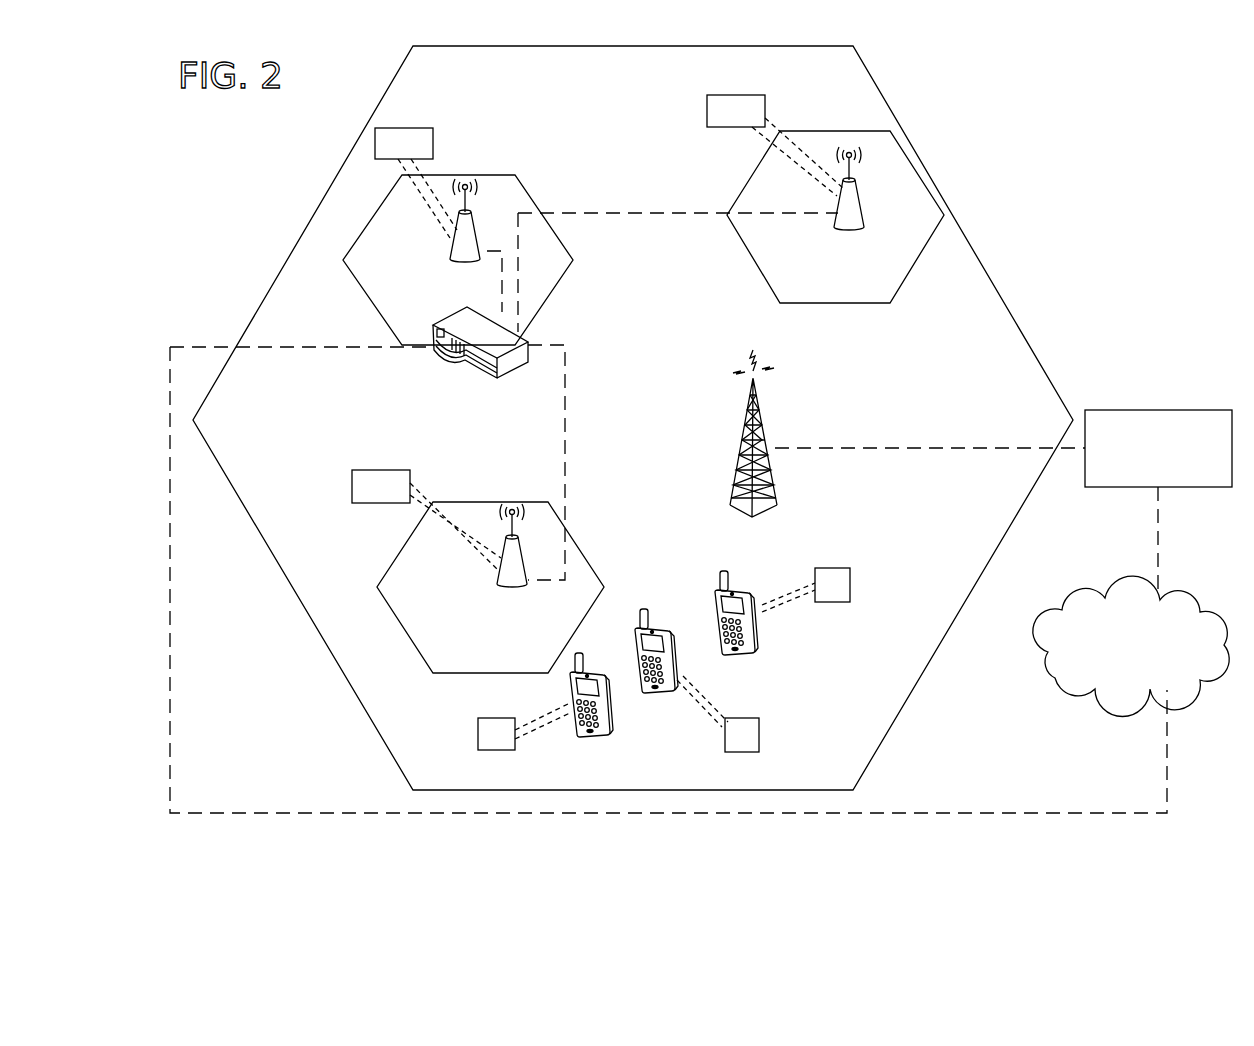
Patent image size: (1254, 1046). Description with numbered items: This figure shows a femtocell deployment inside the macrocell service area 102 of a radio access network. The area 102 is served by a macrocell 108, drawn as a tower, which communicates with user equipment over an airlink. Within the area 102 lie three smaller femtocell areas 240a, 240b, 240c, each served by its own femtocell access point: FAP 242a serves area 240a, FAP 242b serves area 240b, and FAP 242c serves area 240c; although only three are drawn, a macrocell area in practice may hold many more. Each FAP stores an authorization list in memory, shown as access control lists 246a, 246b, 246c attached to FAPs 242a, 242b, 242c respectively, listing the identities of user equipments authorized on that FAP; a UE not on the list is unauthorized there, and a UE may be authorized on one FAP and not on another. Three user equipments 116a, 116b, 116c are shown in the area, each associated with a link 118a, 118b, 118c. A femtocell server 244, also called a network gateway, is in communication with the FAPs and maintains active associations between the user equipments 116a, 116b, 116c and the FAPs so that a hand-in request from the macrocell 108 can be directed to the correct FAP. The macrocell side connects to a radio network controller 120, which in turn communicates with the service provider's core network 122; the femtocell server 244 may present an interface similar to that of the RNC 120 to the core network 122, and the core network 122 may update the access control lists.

The macrocell area 102 is at (308, 256).
The macrocell 108 is at (745, 507).
The user equipment 116a is at (586, 740).
The user equipment 116b is at (648, 695).
The user equipment 116c is at (735, 660).
The backhaul connection 118a is at (478, 734).
The backhaul connection 118b is at (759, 730).
The forward link 118c is at (850, 583).
The radio network controller 120 is at (1158, 448).
The service provider's core network 122 is at (1127, 574).
The femtocell area 240a is at (582, 543).
The femtocell area 240b is at (948, 200).
The femtocell area 240c is at (515, 160).
The femtocell access point 242a is at (500, 586).
The femtocell access point 242b is at (838, 230).
The femtocell access point 242c is at (455, 262).
The femtocell server 244 is at (455, 367).
The access control list 246a is at (372, 470).
The access control list 246b is at (727, 95).
The access control list 246c is at (405, 128).